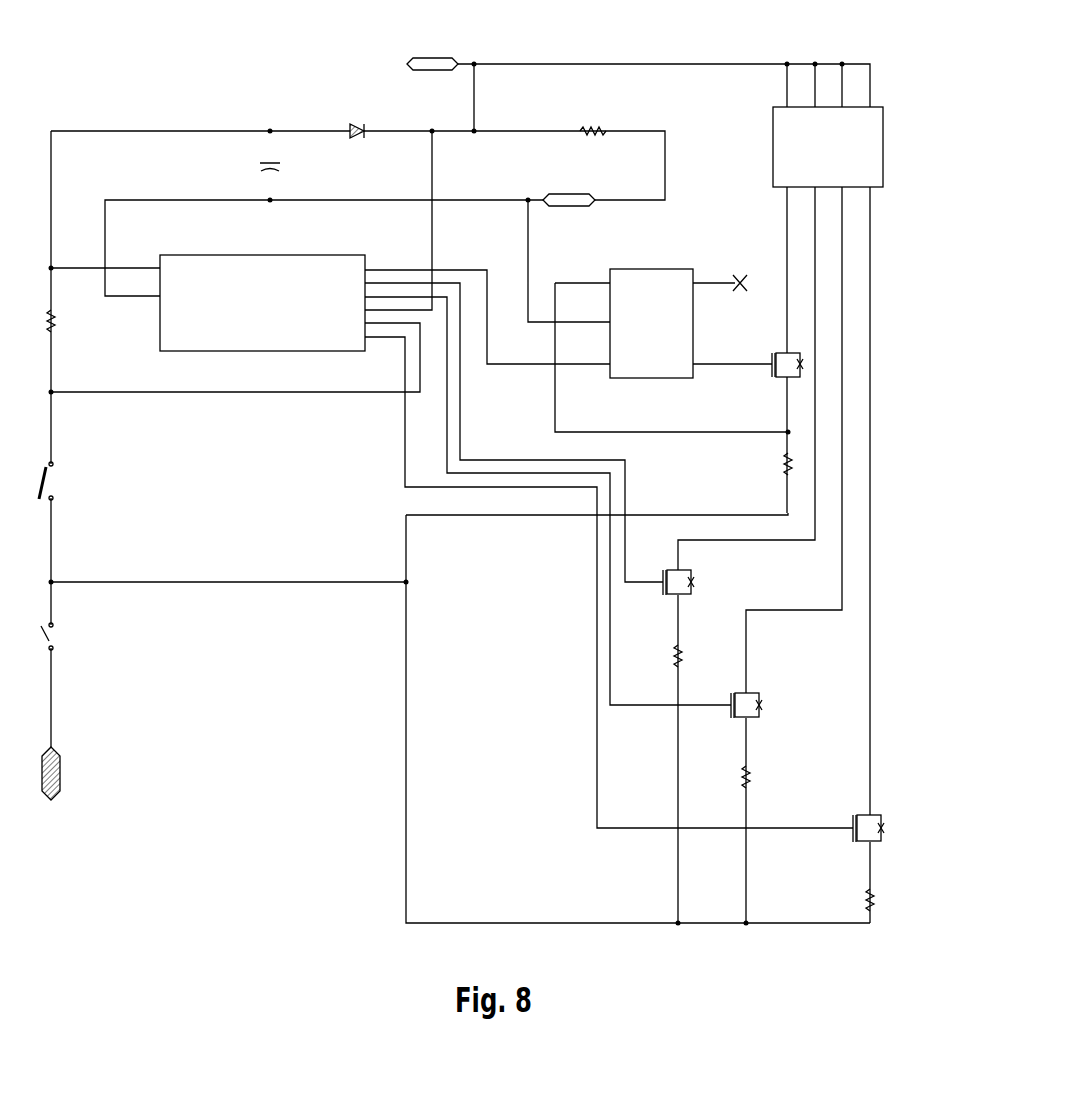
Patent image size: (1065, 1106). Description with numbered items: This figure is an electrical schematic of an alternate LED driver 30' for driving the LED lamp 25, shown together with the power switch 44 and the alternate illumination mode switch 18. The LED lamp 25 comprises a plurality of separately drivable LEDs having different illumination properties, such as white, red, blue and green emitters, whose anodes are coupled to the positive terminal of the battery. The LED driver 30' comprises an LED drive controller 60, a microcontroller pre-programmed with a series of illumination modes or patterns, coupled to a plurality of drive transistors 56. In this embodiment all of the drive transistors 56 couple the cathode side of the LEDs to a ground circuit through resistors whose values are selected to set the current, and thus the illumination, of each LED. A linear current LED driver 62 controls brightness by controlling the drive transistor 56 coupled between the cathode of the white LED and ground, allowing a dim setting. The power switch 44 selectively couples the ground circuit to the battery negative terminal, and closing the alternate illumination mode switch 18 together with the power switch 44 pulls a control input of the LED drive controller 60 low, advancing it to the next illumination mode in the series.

The LED driver 30' is at (468, 464).
The LED drive controller 60 is at (230, 255).
The linear current LED driver 62 is at (680, 268).
The LED lamp 25 is at (873, 107).
The drive transistors 56 is at (770, 372).
The alternate illumination mode switch 18 is at (54, 461).
The power switch 44 is at (54, 644).